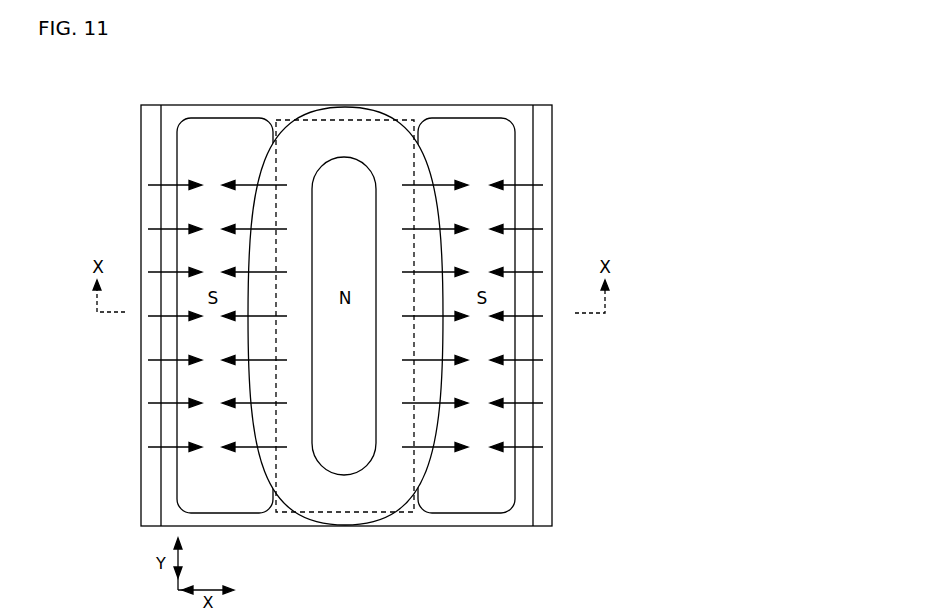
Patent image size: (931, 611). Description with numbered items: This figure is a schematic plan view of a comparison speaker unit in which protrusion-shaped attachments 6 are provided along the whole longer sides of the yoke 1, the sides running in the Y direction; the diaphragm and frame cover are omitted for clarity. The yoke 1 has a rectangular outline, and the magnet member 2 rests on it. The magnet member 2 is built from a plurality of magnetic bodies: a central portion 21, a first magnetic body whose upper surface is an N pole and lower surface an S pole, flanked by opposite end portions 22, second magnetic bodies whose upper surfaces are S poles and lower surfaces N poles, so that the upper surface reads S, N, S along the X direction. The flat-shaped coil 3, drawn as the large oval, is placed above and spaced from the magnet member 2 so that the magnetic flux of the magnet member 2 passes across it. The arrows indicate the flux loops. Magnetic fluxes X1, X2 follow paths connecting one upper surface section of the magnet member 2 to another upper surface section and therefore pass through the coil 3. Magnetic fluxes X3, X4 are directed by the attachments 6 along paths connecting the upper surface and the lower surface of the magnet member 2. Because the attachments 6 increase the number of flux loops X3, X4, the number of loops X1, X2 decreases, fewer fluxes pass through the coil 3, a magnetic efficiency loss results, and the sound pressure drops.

The yoke 1 is at (522, 113).
The magnet member 2 is at (293, 562).
The coil 3 is at (344, 134).
The attachment 6 is at (542, 478).
The central portion 21 is at (350, 452).
The opposite end portions 22 is at (243, 483).
The magnetic flux X1 is at (441, 186).
The magnetic flux X2 is at (248, 186).
The magnetic flux X3 is at (525, 185).
The magnetic flux X4 is at (172, 185).